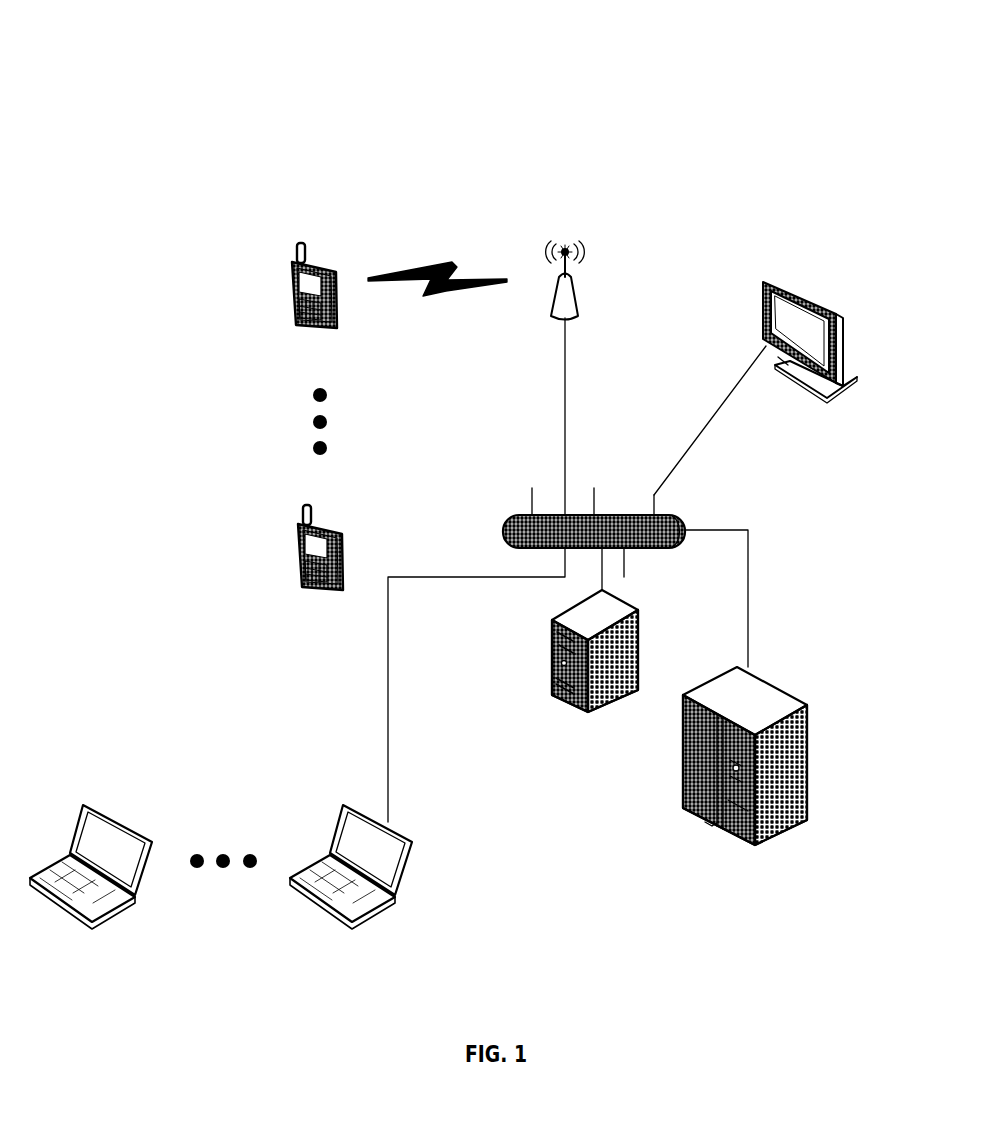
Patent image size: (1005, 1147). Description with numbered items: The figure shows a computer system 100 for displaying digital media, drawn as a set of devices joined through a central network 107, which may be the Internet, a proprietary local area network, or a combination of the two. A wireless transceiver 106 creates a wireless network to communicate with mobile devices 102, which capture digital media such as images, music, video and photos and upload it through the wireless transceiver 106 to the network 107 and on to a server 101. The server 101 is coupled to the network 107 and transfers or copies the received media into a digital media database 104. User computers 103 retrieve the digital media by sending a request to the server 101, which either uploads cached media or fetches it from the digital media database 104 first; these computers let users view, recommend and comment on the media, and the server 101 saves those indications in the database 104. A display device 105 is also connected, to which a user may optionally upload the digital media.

The computer system 100 is at (108, 49).
The server 101 is at (595, 683).
The mobile devices 102 is at (286, 416).
The user computers 103 is at (221, 872).
The digital media database 104 is at (745, 796).
The display device 105 is at (800, 388).
The wireless transceiver 106 is at (476, 354).
The network 107 is at (568, 655).